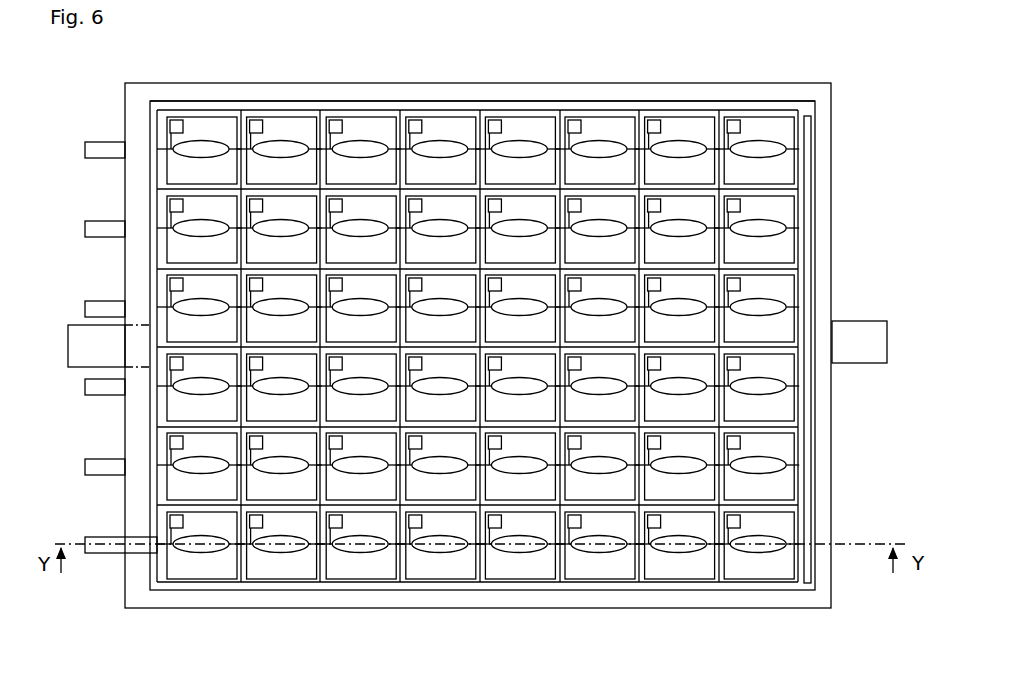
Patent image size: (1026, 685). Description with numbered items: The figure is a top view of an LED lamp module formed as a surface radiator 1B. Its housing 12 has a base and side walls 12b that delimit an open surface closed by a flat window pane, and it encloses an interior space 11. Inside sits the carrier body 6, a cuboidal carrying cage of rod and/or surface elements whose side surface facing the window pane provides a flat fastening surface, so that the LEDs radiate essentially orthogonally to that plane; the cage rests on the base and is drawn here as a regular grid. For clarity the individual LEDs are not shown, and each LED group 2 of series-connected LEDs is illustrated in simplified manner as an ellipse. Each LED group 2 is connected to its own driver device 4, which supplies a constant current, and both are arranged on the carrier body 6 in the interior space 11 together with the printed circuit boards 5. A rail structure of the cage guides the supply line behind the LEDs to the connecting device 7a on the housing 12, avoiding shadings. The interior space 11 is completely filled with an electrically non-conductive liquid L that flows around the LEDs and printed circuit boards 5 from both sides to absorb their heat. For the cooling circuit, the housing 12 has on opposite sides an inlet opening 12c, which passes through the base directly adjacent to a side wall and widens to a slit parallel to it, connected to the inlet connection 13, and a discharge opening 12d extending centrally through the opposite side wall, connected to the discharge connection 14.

The surface radiator 1B is at (88, 108).
The LED group 2 is at (215, 148).
The driver device 4 is at (172, 117).
The printed circuit board 5 is at (211, 116).
The carrier body 6 is at (152, 208).
The connecting device 7a is at (112, 553).
The interior space 11 is at (358, 101).
The housing 12 is at (228, 608).
The side wall 12b is at (831, 120).
The inlet opening 12c is at (806, 232).
The discharge opening 12d is at (137, 332).
The inlet connection 13 is at (865, 348).
The discharge connection 14 is at (82, 350).